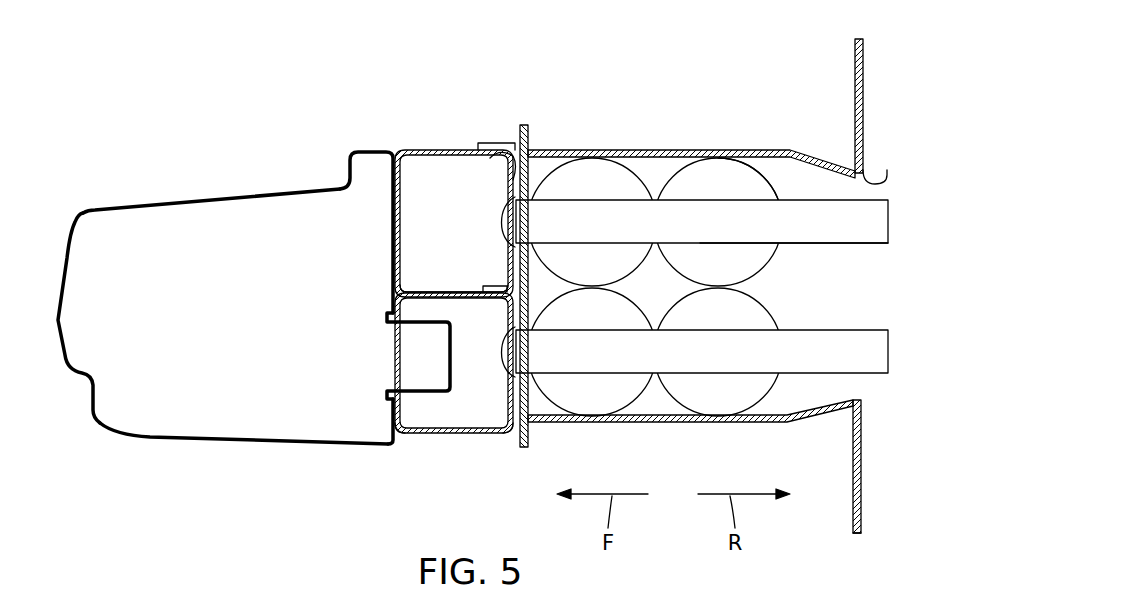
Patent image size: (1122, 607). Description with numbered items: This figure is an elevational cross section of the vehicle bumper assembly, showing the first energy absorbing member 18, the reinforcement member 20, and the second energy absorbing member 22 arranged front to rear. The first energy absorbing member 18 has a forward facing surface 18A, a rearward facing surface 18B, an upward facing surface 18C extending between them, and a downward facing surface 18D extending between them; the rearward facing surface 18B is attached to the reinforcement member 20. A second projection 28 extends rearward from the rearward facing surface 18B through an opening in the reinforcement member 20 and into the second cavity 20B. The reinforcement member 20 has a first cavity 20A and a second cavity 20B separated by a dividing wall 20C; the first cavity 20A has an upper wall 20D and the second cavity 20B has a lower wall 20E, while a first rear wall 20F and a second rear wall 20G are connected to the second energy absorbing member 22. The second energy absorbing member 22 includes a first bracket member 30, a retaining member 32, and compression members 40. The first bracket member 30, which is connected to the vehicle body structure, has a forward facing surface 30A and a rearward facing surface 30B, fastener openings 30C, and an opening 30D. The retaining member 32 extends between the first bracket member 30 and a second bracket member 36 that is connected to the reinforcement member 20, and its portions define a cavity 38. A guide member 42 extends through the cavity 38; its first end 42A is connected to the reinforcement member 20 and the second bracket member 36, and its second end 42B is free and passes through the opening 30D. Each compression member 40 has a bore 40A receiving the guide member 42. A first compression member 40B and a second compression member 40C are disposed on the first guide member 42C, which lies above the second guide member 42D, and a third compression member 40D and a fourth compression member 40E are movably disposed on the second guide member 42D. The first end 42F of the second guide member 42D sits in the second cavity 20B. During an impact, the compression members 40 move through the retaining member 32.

The first energy absorbing member 18 is at (246, 308).
The forward facing surface 18A is at (65, 260).
The rearward facing surface 18B is at (398, 210).
The upward facing surface 18C is at (193, 200).
The downward facing surface 18D is at (252, 444).
The reinforcement member 20 is at (444, 285).
The first cavity 20A is at (470, 192).
The second cavity 20B is at (460, 407).
The dividing wall 20C is at (447, 293).
The upper wall 20D is at (430, 148).
The lower wall 20E is at (418, 432).
The first rear wall 20F is at (497, 150).
The second rear wall 20G is at (483, 433).
The second energy absorbing member 22 is at (731, 145).
The second projection 28 is at (408, 415).
The first bracket member 30 is at (844, 289).
The forward facing surface 30A is at (852, 53).
The rearward facing surface 30B is at (853, 523).
The fastener openings 30C is at (856, 77).
The opening 30D is at (870, 182).
The retaining member 32 is at (673, 422).
The second bracket member 36 is at (527, 447).
The cavity 38 is at (660, 147).
The compression member 40 is at (680, 279).
The bore 40A is at (585, 200).
The first compression member 40B is at (660, 173).
The second compression member 40C is at (768, 172).
The third compression member 40D is at (597, 390).
The fourth compression member 40E is at (733, 390).
The guide member 42 is at (661, 249).
The first end 42A is at (500, 228).
The second end 42B is at (888, 218).
The first guide member 42C is at (827, 247).
The second guide member 42D is at (830, 330).
The first end 42F is at (500, 357).